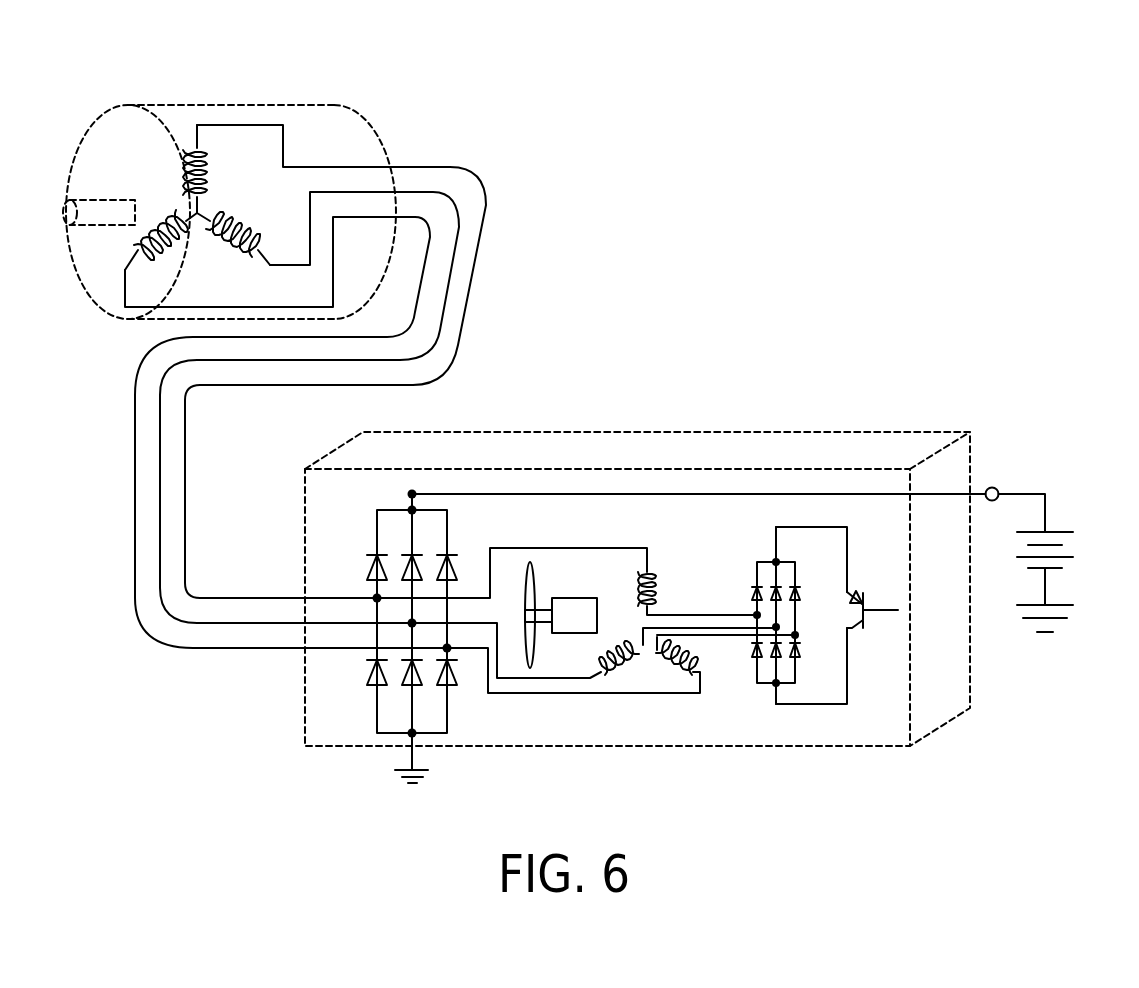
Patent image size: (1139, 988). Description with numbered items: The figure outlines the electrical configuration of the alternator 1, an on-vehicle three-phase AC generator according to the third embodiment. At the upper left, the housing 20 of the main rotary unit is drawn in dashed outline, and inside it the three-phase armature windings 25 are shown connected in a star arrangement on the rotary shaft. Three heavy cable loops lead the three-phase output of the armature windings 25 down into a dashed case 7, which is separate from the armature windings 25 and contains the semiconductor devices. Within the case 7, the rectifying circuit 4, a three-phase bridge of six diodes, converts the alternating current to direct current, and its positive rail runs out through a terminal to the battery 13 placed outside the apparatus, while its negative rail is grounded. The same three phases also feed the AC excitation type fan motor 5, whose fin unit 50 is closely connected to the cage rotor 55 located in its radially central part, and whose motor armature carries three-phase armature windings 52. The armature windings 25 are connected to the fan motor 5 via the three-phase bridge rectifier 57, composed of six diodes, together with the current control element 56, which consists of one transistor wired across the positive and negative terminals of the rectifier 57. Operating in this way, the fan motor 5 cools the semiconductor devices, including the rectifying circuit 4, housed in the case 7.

The alternator 1 is at (636, 284).
The housing 20 is at (298, 105).
The armature windings 25 is at (210, 157).
The case 7 is at (718, 432).
The rectifying circuit 4 is at (385, 742).
The battery 13 is at (1062, 532).
The fan motor 5 is at (653, 673).
The fin unit 50 is at (526, 668).
The cage rotor 55 is at (575, 648).
The armature windings 52 is at (625, 660).
The three-phase bridge rectifier 57 is at (775, 687).
The current control element 56 is at (865, 600).